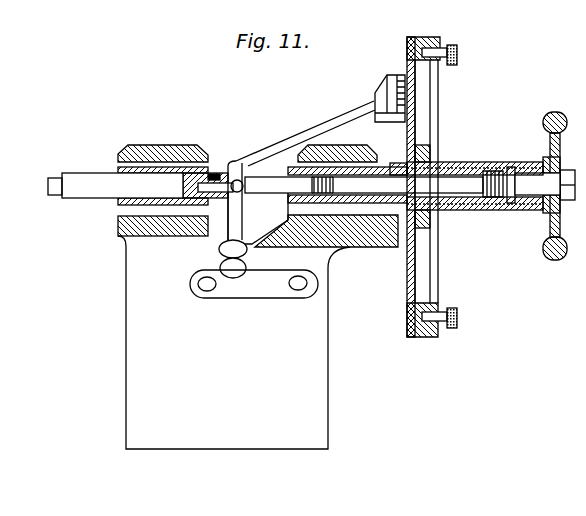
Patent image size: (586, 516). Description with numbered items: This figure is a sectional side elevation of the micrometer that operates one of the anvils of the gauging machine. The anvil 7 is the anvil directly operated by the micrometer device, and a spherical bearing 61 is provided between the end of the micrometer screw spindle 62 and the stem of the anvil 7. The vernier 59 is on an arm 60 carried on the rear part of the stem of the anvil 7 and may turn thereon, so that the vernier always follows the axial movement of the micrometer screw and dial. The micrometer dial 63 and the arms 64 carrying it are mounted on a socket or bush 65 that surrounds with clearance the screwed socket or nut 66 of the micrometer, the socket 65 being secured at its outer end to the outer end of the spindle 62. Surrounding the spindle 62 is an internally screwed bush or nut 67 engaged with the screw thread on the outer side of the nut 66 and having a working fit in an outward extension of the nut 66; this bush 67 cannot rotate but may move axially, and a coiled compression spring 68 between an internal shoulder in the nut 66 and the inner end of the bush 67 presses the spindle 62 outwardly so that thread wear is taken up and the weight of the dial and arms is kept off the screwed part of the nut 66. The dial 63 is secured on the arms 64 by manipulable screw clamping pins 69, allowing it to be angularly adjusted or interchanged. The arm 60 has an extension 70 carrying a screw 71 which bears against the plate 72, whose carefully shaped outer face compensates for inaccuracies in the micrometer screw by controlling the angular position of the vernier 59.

The anvil 7 is at (76, 175).
The vernier 59 is at (400, 90).
The arm 60 is at (306, 139).
The spherical bearing 61 is at (248, 192).
The micrometer screw spindle 62 is at (277, 182).
The micrometer dial 63 is at (425, 38).
The arms 64 is at (415, 109).
The socket or bush 65 is at (457, 164).
The screwed socket or nut 66 is at (318, 205).
The internally screwed bush or nut 67 is at (458, 211).
The coiled compression spring 68 is at (402, 163).
The screw clamping pins 69 is at (457, 53).
The extension 70 is at (226, 224).
The screw 71 is at (236, 286).
The plate 72 is at (268, 287).